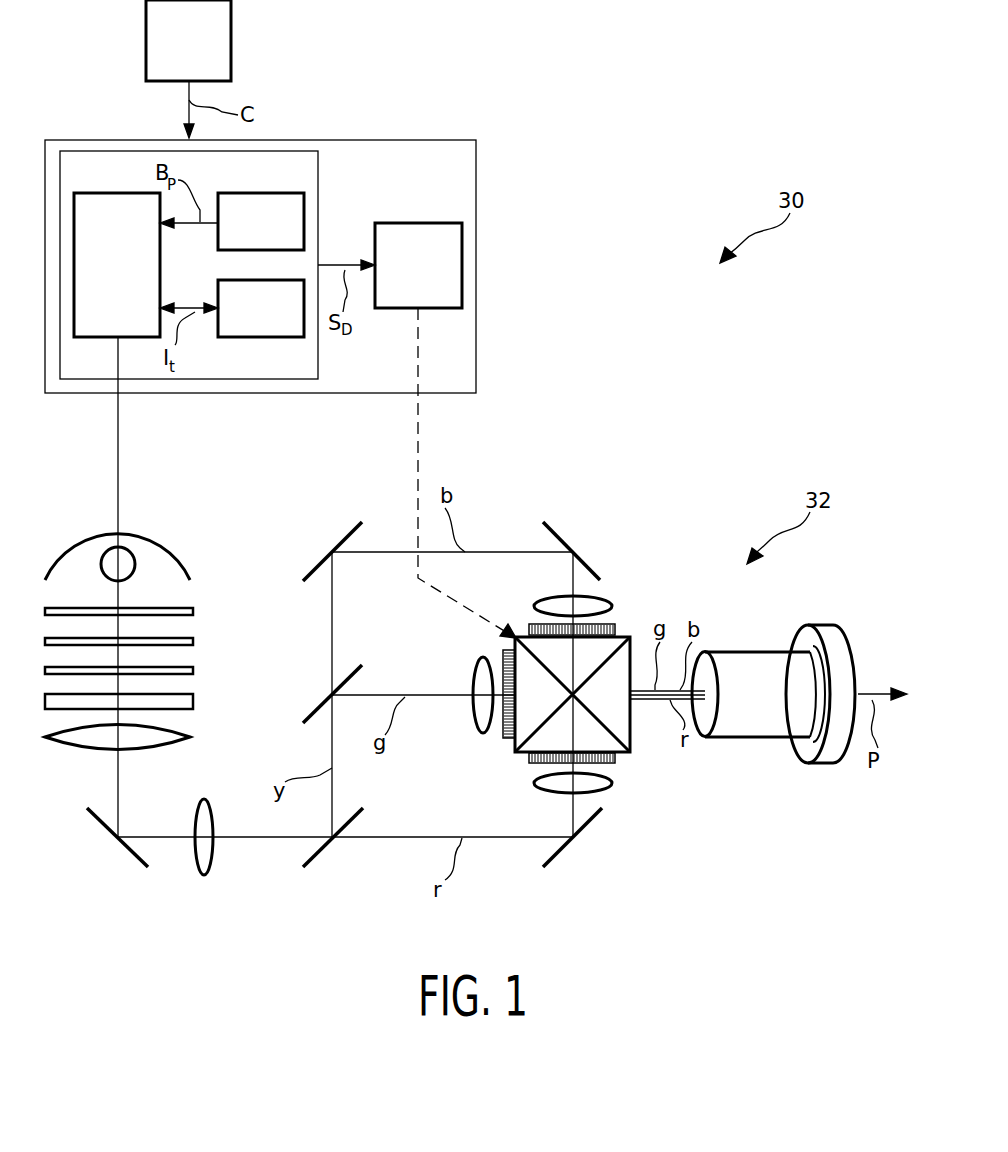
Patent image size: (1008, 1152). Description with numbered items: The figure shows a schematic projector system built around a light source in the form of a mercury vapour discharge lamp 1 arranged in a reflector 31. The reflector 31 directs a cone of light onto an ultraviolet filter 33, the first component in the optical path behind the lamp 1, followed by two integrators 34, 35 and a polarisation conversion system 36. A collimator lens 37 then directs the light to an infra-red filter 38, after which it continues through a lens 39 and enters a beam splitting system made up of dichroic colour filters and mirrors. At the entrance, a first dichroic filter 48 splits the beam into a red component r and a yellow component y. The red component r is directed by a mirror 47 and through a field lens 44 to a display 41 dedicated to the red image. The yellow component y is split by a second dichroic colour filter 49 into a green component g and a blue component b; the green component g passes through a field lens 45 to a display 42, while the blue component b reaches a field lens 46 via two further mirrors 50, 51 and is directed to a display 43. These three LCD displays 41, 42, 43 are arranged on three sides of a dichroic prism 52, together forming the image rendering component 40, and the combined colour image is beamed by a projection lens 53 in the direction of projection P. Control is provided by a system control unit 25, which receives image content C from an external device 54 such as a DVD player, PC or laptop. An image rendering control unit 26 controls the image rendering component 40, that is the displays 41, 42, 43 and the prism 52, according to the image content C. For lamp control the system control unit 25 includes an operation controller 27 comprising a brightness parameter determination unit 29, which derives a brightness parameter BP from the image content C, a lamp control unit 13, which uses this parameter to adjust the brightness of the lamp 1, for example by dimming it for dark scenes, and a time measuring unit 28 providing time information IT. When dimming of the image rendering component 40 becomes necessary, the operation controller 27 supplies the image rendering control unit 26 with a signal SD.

The external device 54 is at (217, 39).
The system control unit 25 is at (477, 165).
The operation controller 27 is at (318, 196).
The lamp control unit 13 is at (131, 281).
The brightness parameter determination unit 29 is at (275, 234).
The time measuring unit 28 is at (275, 319).
The image rendering control unit 26 is at (450, 253).
The reflector 31 is at (85, 540).
The mercury vapour discharge lamp 1 is at (125, 560).
The ultraviolet filter 33 is at (193, 611).
The integrator 34 is at (193, 641).
The integrator 35 is at (193, 670).
The polarisation conversion system 36 is at (193, 701).
The collimator lens 37 is at (185, 735).
The infra-red filter 38 is at (128, 852).
The lens 39 is at (205, 850).
The first dichroic colour filter 48 is at (318, 855).
The second dichroic colour filter 49 is at (318, 705).
The mirror 50 is at (322, 560).
The mirror 51 is at (585, 560).
The mirror 47 is at (562, 852).
The field lens 45 is at (484, 718).
The field lens 46 is at (605, 605).
The field lens 44 is at (605, 785).
The LCD display 42 is at (507, 740).
The LCD display 43 is at (615, 627).
The LCD display 41 is at (612, 760).
The image rendering component 40 is at (642, 742).
The dichroic prism 52 is at (571, 666).
The projection lens 53 is at (782, 706).